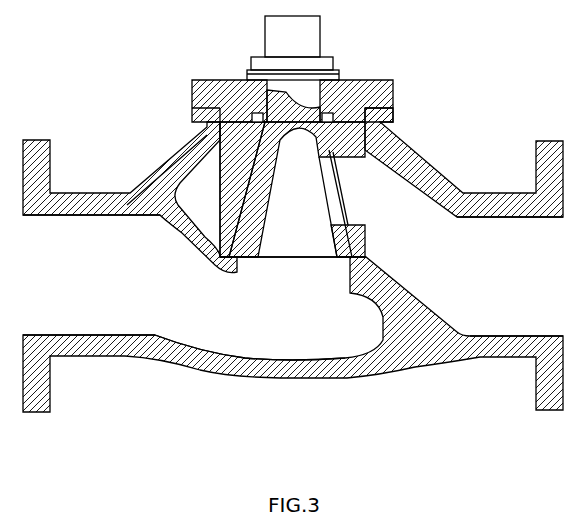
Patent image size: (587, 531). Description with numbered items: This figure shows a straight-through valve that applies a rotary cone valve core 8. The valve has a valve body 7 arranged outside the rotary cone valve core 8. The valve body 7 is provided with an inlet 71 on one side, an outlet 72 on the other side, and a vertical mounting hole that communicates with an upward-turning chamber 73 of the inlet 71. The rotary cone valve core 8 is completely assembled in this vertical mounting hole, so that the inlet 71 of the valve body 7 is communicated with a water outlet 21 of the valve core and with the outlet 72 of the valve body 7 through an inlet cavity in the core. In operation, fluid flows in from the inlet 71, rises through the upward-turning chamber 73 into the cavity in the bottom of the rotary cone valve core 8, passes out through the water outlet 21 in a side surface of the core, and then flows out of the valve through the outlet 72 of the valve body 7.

The valve body 7 is at (130, 202).
The rotary cone valve core 8 is at (386, 97).
The water outlet 21 is at (350, 196).
The inlet of the valve body 71 is at (127, 285).
The outlet of the valve body 72 is at (472, 287).
The upward-turning chamber 73 is at (292, 260).